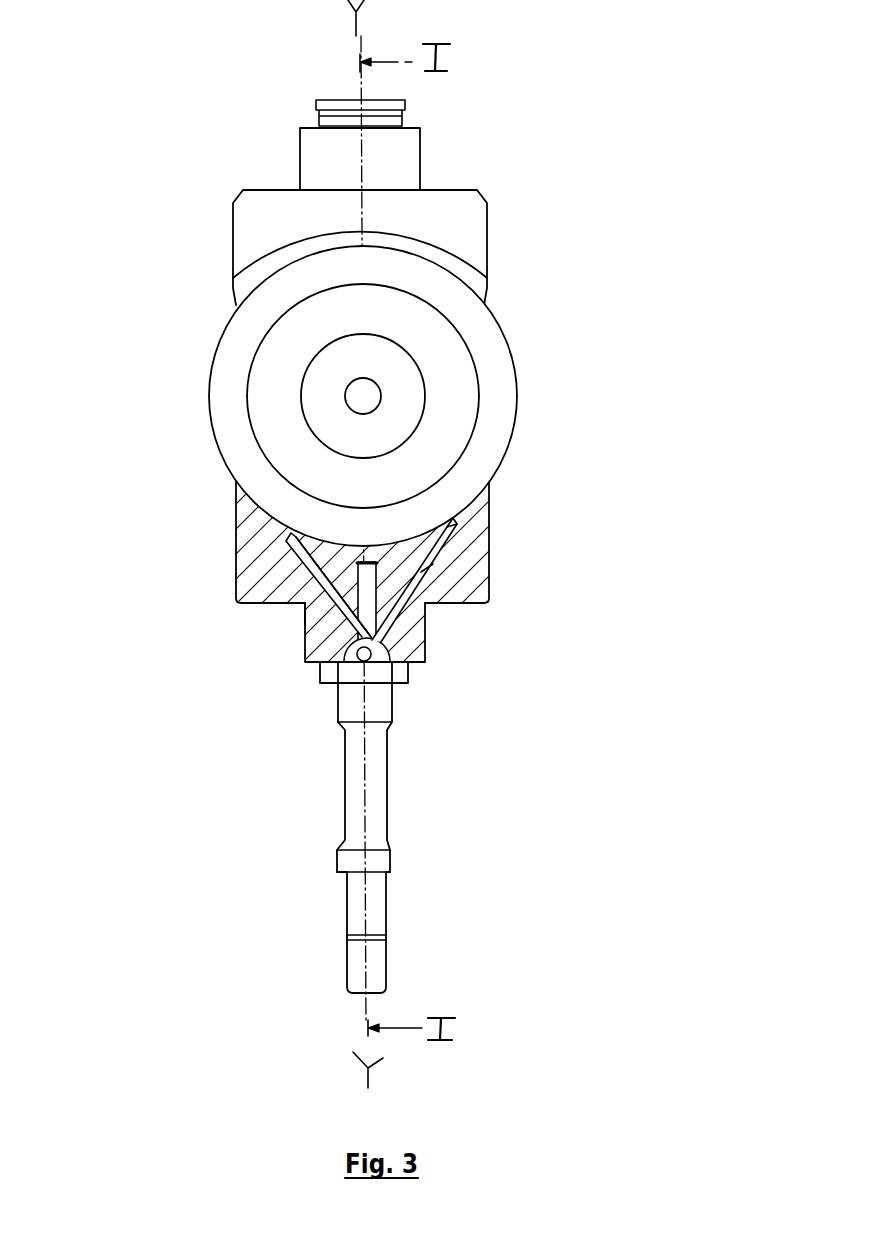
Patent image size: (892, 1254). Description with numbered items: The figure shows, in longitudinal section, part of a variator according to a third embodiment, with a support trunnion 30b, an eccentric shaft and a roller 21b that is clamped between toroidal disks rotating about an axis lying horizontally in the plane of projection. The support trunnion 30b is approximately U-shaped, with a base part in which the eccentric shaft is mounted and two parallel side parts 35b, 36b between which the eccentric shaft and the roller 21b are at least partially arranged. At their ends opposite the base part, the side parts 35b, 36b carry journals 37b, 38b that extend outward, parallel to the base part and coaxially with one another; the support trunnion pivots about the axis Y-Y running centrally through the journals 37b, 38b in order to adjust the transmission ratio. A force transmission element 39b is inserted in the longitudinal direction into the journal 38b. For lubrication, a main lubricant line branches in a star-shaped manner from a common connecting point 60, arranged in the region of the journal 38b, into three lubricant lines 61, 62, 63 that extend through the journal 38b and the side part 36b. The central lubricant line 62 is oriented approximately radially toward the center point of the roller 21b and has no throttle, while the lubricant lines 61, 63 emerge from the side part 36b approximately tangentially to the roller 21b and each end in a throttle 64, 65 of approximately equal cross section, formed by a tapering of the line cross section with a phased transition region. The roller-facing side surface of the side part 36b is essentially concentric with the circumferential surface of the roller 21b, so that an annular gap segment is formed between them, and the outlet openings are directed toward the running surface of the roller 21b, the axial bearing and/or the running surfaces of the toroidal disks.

The roller 21b is at (453, 417).
The support trunnion 30b is at (554, 544).
The side part 35b is at (463, 223).
The side part 36b is at (463, 579).
The journal 37b is at (402, 157).
The journal 38b is at (415, 633).
The force transmission element 39b is at (378, 818).
The connecting point 60 is at (337, 664).
The lubricant line 61 is at (303, 580).
The lubricant line 62 is at (300, 604).
The lubricant line 63 is at (423, 608).
The throttle 64 is at (300, 554).
The throttle 65 is at (466, 552).